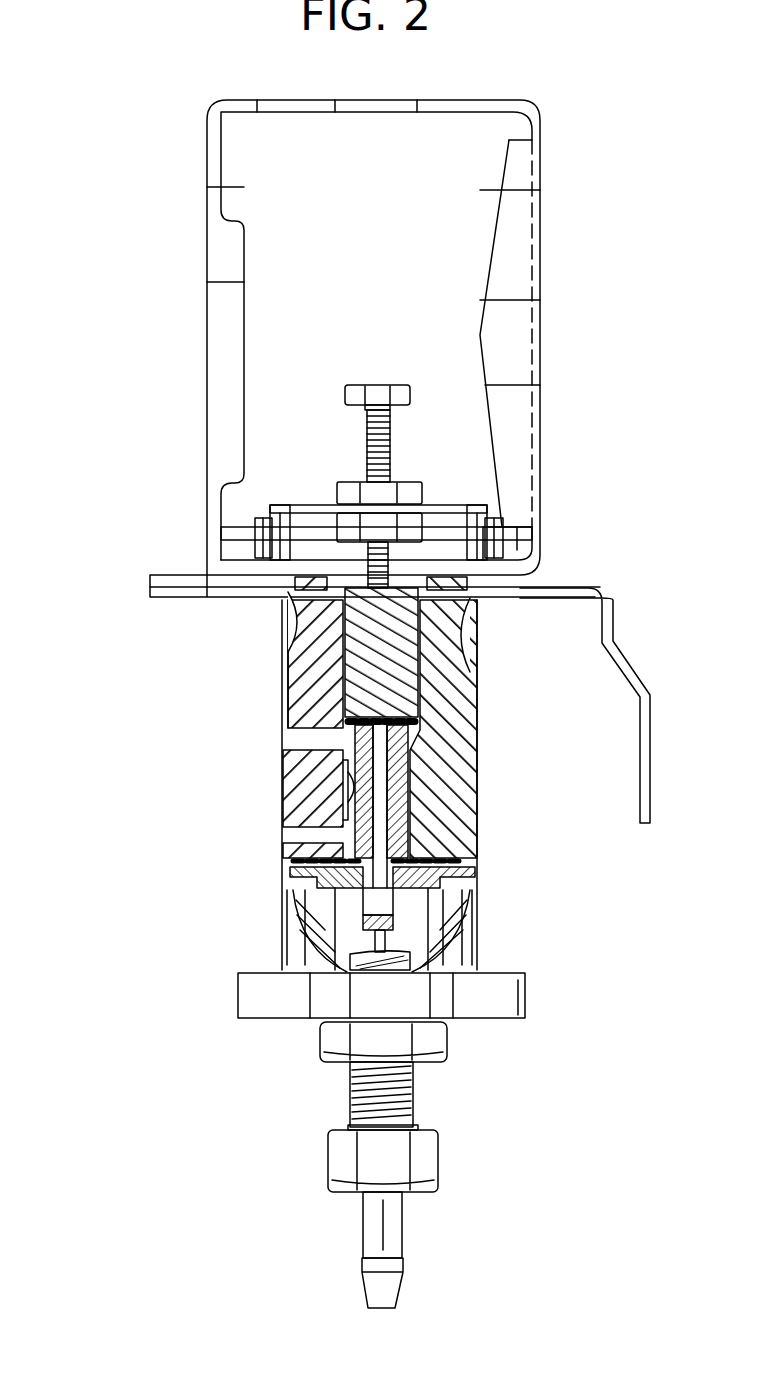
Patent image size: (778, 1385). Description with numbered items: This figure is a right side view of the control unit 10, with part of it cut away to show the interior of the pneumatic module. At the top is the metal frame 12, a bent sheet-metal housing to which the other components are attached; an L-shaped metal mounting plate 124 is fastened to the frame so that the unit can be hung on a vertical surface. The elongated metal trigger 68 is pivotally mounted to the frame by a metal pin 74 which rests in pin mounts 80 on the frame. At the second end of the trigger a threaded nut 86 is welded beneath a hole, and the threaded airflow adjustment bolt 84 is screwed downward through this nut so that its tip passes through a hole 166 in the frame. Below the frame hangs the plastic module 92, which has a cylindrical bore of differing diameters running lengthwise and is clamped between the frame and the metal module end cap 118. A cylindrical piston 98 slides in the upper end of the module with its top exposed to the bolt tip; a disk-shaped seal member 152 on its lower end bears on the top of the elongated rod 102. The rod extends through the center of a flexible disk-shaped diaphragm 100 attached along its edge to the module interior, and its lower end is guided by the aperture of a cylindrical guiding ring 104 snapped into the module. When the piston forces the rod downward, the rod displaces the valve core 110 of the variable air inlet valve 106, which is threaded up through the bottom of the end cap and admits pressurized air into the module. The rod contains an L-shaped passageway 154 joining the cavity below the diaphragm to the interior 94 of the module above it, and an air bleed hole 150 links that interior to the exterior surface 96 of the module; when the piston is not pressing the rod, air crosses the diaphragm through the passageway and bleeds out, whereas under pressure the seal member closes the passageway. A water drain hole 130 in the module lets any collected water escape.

The control unit 10 is at (148, 98).
The metal frame 12 is at (542, 560).
The elongated trigger 68 is at (300, 504).
The metal pin 74 is at (240, 529).
The pin mounts 80 is at (503, 530).
The airflow adjustment bolt 84 is at (407, 384).
The threaded nut 86 is at (425, 525).
The module 92 is at (460, 688).
The interior of the module 94 is at (327, 815).
The exterior surface of the module 96 is at (283, 765).
The cylindrical piston 98 is at (357, 653).
The flexible disk-shaped diaphragm 100 is at (458, 852).
The elongated rod 102 is at (397, 778).
The cylindrical guiding ring 104 is at (472, 888).
The variable air inlet valve 106 is at (328, 1158).
The valve core 110 is at (380, 947).
The metal module end cap 118 is at (525, 995).
The L-shaped metal mounting plate 124 is at (615, 610).
The water drain hole 130 is at (297, 838).
The air bleed hole 150 is at (297, 742).
The disk-shaped seal member 152 is at (422, 733).
The L-shaped passageway 154 is at (382, 800).
The hole in the frame 166 is at (425, 590).